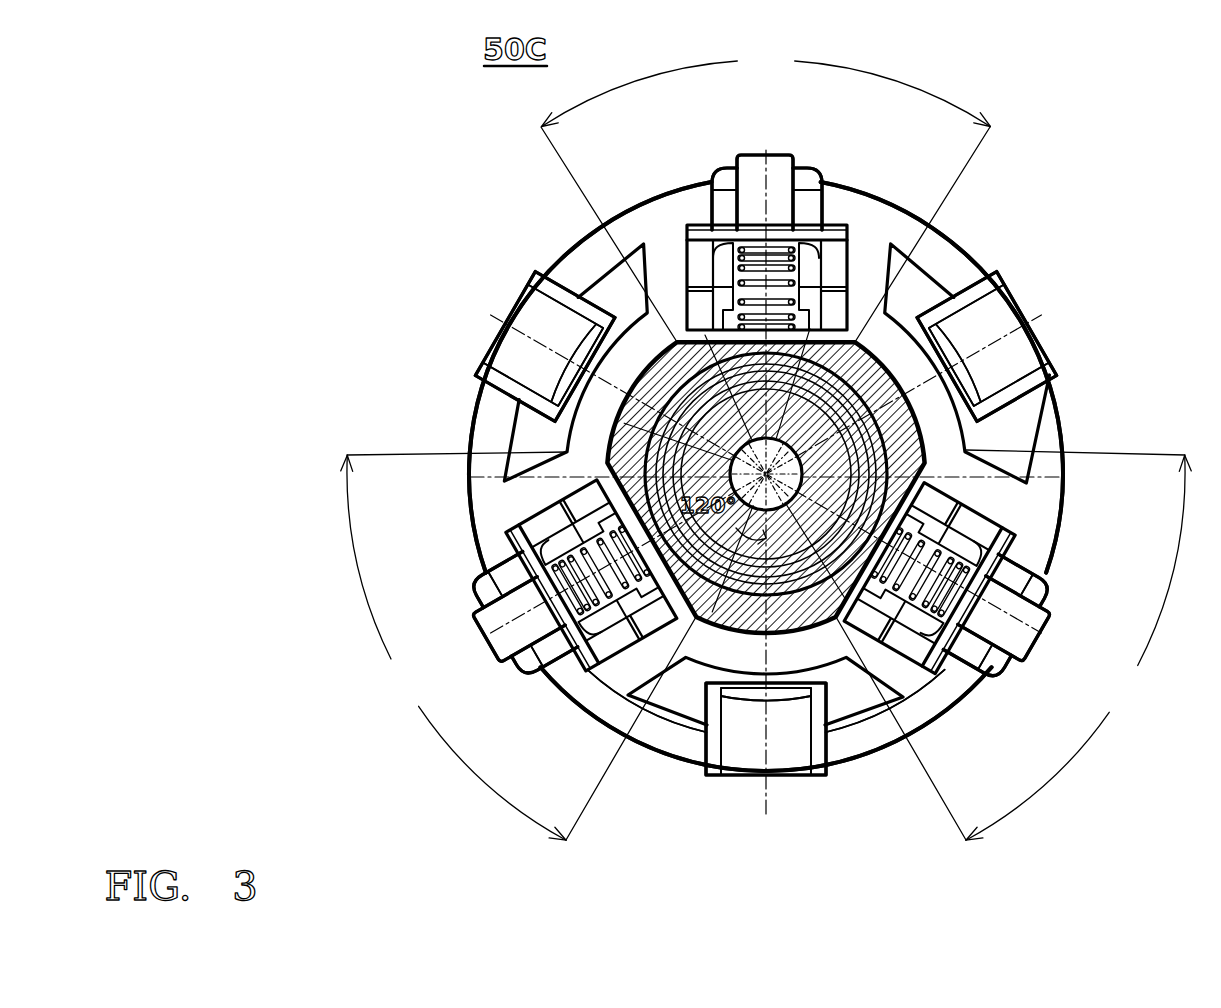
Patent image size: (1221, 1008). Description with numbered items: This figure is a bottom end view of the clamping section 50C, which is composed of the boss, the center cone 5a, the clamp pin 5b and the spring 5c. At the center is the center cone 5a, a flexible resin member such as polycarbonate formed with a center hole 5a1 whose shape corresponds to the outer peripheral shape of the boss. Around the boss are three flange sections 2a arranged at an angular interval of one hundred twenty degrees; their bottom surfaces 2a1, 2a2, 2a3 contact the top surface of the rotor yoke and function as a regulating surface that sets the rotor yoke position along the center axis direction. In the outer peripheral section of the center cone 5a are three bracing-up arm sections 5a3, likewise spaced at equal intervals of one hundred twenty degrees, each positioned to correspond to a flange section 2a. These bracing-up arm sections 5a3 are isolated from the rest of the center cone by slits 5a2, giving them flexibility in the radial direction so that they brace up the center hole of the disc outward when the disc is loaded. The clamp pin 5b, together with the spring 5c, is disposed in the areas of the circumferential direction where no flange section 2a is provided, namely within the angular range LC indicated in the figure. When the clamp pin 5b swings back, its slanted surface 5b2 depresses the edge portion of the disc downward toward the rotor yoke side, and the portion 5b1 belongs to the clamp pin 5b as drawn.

The clamping section 50C is at (766, 450).
The flange section 2a is at (765, 701).
The bottom surface 2a1 is at (662, 298).
The bottom surface 2a2 is at (888, 330).
The bottom surface 2a3 is at (688, 658).
The center cone 5a is at (870, 258).
The center hole 5a1 is at (966, 448).
The slit 5a2 is at (553, 277).
The bracing-up arm section 5a3 is at (520, 293).
The clamp pin 5b is at (752, 172).
The bolt shaft 5b1 is at (770, 157).
The slanted surface 5b2 is at (808, 182).
The spring 5c is at (713, 287).
The angular range LC is at (766, 441).